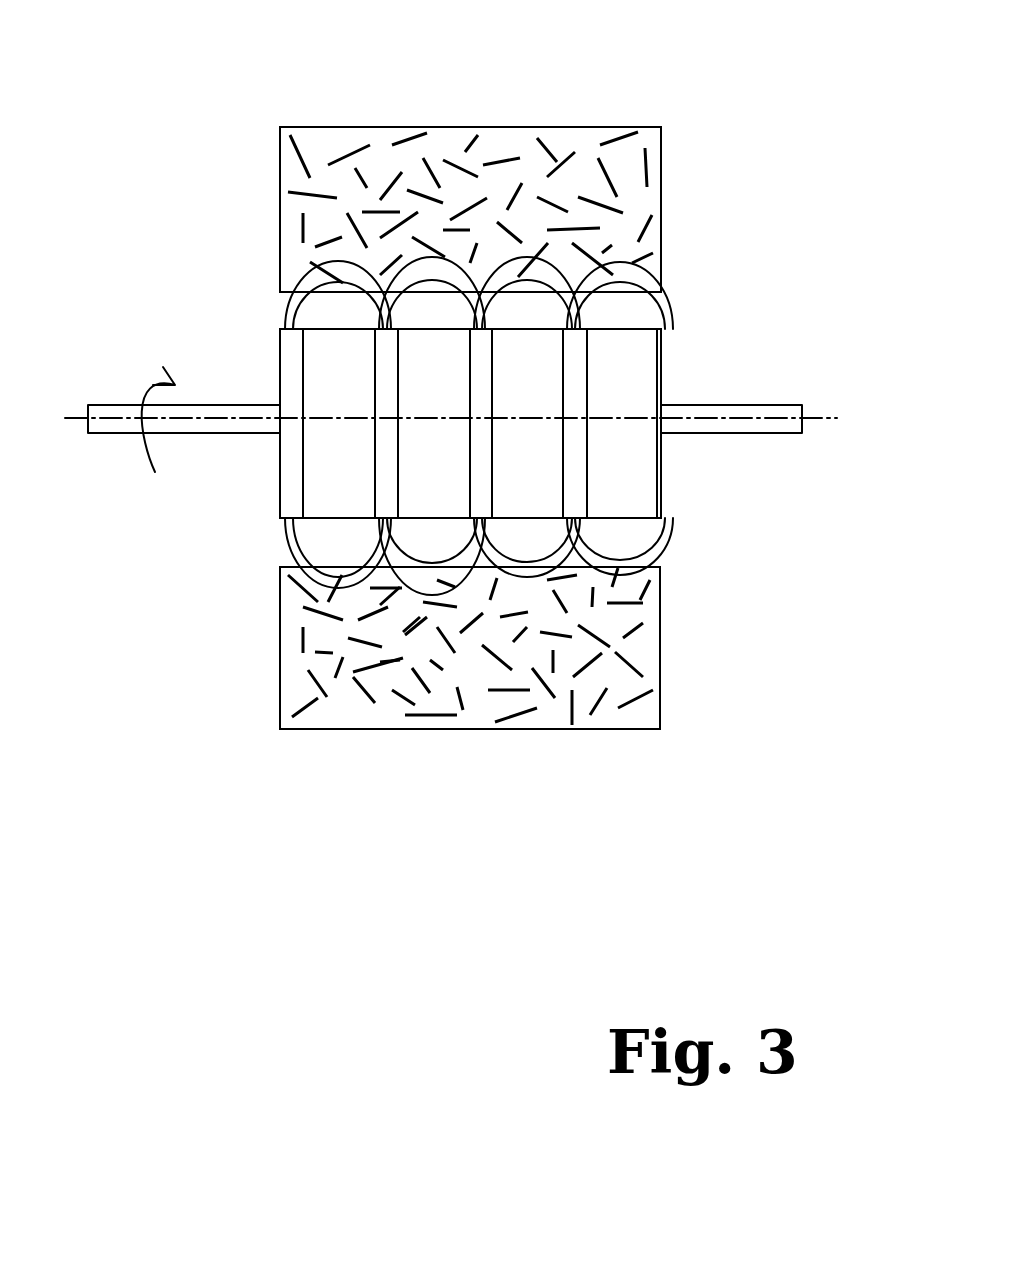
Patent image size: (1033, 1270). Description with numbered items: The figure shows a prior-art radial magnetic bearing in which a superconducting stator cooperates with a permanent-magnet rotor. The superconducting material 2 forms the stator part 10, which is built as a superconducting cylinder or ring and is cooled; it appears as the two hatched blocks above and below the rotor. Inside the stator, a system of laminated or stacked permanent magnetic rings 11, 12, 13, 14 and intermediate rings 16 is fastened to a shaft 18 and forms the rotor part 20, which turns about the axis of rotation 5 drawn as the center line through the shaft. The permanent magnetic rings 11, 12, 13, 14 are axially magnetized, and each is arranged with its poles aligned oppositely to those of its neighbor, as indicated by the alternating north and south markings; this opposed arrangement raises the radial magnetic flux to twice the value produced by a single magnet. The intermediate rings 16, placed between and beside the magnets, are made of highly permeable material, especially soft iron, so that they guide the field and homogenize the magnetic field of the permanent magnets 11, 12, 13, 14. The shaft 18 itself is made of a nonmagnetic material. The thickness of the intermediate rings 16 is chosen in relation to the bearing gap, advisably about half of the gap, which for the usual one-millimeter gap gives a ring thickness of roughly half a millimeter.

The superconducting material 2 is at (647, 157).
The axis of rotation 5 is at (818, 420).
The stator part 10 is at (556, 391).
The permanent magnetic ring 11 is at (635, 475).
The permanent magnetic ring 12 is at (540, 488).
The permanent magnetic ring 13 is at (432, 495).
The permanent magnetic ring 14 is at (323, 489).
The intermediate ring 16 is at (300, 472).
The shaft 18 is at (792, 413).
The rotor part 20 is at (497, 552).